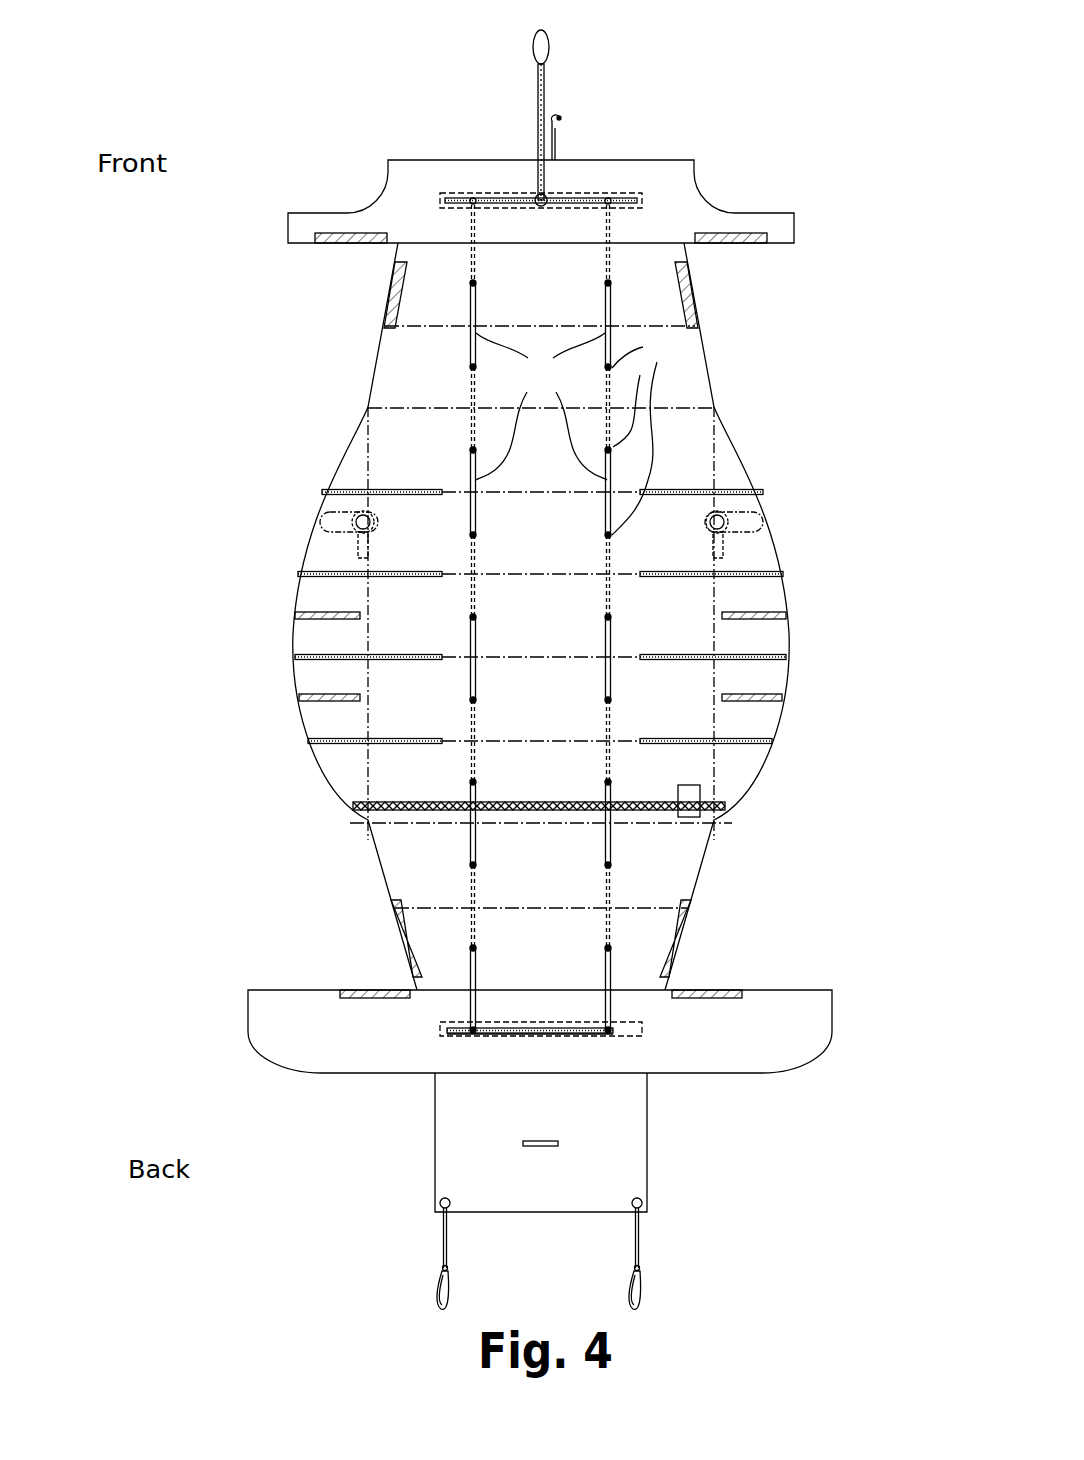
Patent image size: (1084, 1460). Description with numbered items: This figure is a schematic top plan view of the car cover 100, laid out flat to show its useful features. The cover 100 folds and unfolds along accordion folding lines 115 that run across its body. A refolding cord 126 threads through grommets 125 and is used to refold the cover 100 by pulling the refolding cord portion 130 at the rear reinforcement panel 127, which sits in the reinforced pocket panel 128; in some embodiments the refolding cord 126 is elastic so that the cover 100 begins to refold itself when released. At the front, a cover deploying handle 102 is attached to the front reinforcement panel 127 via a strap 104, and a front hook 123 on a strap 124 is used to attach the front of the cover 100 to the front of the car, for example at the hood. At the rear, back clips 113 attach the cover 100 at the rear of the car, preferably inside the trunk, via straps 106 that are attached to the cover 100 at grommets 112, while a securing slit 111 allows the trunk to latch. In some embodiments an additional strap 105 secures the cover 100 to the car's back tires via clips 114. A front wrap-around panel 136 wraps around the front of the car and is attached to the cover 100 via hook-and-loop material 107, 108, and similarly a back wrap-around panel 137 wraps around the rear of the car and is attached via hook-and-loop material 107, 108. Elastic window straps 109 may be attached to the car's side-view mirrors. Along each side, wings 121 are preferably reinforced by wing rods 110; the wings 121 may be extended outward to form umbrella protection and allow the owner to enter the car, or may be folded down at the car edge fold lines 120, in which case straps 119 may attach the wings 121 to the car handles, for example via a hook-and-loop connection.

The cover 100 is at (345, 185).
The cover deploying handle 102 is at (549, 40).
The strap 104 is at (546, 82).
The front hook 123 is at (561, 116).
The strap 124 is at (557, 143).
The reinforcement panel 127 is at (458, 194).
The front wrap-around panel 136 is at (708, 190).
The reinforced pocket panel 128 is at (620, 206).
The hook-and-loop material 108 is at (340, 246).
The hook-and-loop material 107 is at (385, 318).
The accordion folding lines 115 is at (446, 327).
The refolding cord 126 is at (541, 406).
The grommets 125 is at (642, 434).
The car edge fold lines 120 is at (368, 447).
The wing rods 110 is at (322, 492).
The wings 121 is at (316, 548).
The elastic window straps 109 is at (371, 529).
The straps 119 is at (350, 619).
The strap 105 is at (392, 812).
The clips 114 is at (702, 815).
The back wrap-around panel 137 is at (812, 1022).
The refolding cord portion 130 is at (530, 1036).
The securing slit 111 is at (540, 1141).
The grommets 112 is at (440, 1204).
The straps 106 is at (442, 1242).
The back clips 113 is at (438, 1300).